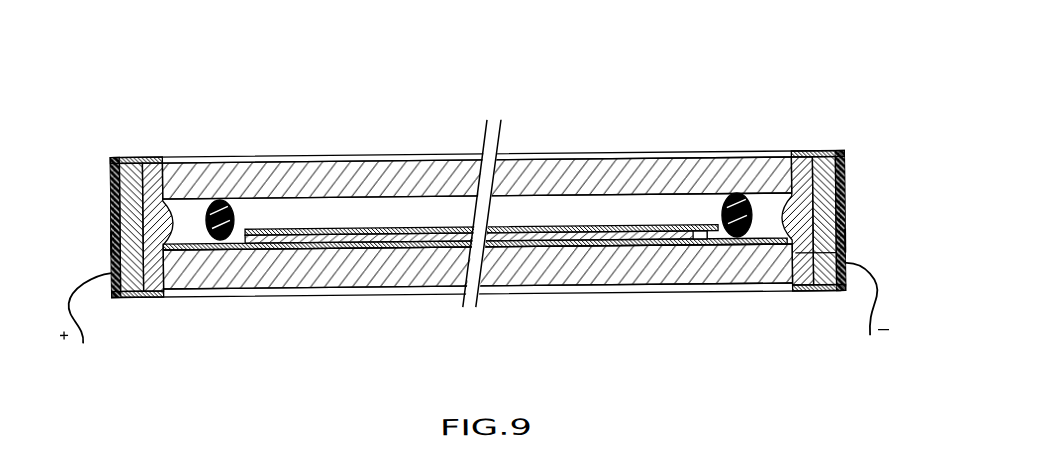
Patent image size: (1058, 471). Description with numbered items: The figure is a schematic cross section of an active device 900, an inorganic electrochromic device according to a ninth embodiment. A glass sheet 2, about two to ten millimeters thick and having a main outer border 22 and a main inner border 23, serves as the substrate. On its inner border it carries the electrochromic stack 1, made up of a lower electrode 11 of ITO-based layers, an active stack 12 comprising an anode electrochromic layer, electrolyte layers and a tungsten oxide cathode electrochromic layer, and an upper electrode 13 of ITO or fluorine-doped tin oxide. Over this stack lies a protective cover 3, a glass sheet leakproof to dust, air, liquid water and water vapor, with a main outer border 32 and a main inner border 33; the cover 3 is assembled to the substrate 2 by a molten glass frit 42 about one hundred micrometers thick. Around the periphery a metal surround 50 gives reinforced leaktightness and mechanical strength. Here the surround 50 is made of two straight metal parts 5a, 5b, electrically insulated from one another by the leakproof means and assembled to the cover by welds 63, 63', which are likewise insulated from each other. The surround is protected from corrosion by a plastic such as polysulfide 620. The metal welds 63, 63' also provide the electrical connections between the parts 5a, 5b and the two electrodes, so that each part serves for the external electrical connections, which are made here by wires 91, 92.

The active device 900 is at (362, 107).
The metal surround 50 is at (118, 154).
The polysulfide 620 is at (111, 181).
The first part of the surround 5a is at (138, 156).
The second part of the surround 5b is at (813, 160).
The protective cover 3 is at (416, 172).
The main outer border of the cover 32 is at (540, 160).
The main inner border of the cover 33 is at (588, 205).
The glass sheet 2 is at (512, 270).
The main outer border of the substrate 22 is at (588, 288).
The main inner border of the substrate 23 is at (650, 249).
The electrochromic stack 1 is at (476, 306).
The lower electrode 11 is at (295, 246).
The active stack 12 is at (337, 239).
The upper electrode 13 is at (388, 232).
The molten glass frit 42 is at (220, 197).
The weld 63 is at (86, 245).
The weld 63' is at (873, 239).
The wire 91 is at (82, 314).
The wire 92 is at (866, 316).